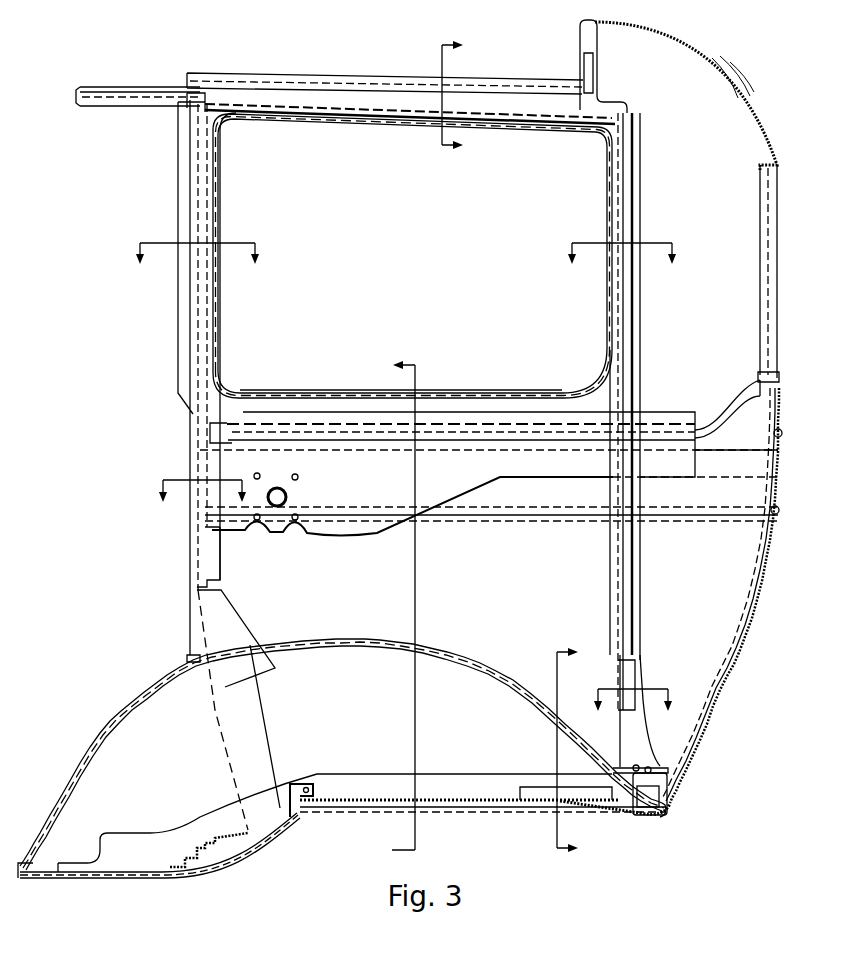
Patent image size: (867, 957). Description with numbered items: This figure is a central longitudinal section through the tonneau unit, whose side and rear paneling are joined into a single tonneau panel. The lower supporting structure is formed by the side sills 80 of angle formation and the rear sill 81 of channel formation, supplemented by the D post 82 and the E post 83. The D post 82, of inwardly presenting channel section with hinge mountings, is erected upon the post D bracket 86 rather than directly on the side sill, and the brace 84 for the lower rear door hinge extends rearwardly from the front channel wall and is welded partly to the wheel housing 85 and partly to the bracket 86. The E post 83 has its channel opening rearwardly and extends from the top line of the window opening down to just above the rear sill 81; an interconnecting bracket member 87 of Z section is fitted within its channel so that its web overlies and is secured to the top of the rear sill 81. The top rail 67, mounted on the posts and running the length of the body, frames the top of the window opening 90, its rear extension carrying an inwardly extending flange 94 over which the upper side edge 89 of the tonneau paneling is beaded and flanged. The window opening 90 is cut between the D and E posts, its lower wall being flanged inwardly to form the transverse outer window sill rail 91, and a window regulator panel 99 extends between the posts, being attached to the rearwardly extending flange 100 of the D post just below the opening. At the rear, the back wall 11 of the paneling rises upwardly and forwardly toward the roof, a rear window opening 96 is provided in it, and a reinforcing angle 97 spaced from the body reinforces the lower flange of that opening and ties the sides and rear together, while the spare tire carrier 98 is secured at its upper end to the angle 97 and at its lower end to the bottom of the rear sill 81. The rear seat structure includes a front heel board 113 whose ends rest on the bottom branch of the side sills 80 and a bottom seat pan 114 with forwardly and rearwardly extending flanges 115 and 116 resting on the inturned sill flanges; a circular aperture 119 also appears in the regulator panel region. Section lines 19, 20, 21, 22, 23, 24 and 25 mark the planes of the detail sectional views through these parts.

The hood panel 11 is at (775, 126).
The section line 19 is at (199, 503).
The section line 20 is at (198, 267).
The section line 21 is at (622, 268).
The section line 22 is at (467, 96).
The section line 23 is at (388, 609).
The section line 24 is at (635, 712).
The section line 25 is at (582, 751).
The top rail 67 is at (104, 89).
The tonneau side sill 80 is at (481, 794).
The rear sill 81 is at (658, 783).
The D post 82 is at (328, 113).
The E post 83 is at (628, 581).
The brace 84 is at (213, 614).
The wheel housing 85 is at (343, 754).
The post D bracket 86 is at (315, 821).
The interconnecting bracket member 87 is at (633, 746).
The upper side edge of tonneau paneling 89 is at (360, 88).
The window opening 90 is at (412, 256).
The transverse outer window sill rail 91 is at (481, 391).
The inwardly extending flange 94 is at (394, 118).
The rear window opening 96 is at (773, 225).
The reinforcing angle 97 is at (727, 403).
The spare tire carrier 98 is at (757, 553).
The window regulator panel 99 is at (489, 450).
The rearwardly extending flange 100 is at (222, 576).
The front heel board 113 is at (248, 838).
The bottom seat pan 114 is at (410, 804).
The forwardly extending flange 115 is at (295, 822).
The rearwardly extending flange 116 is at (636, 814).
The hole 119 is at (262, 498).